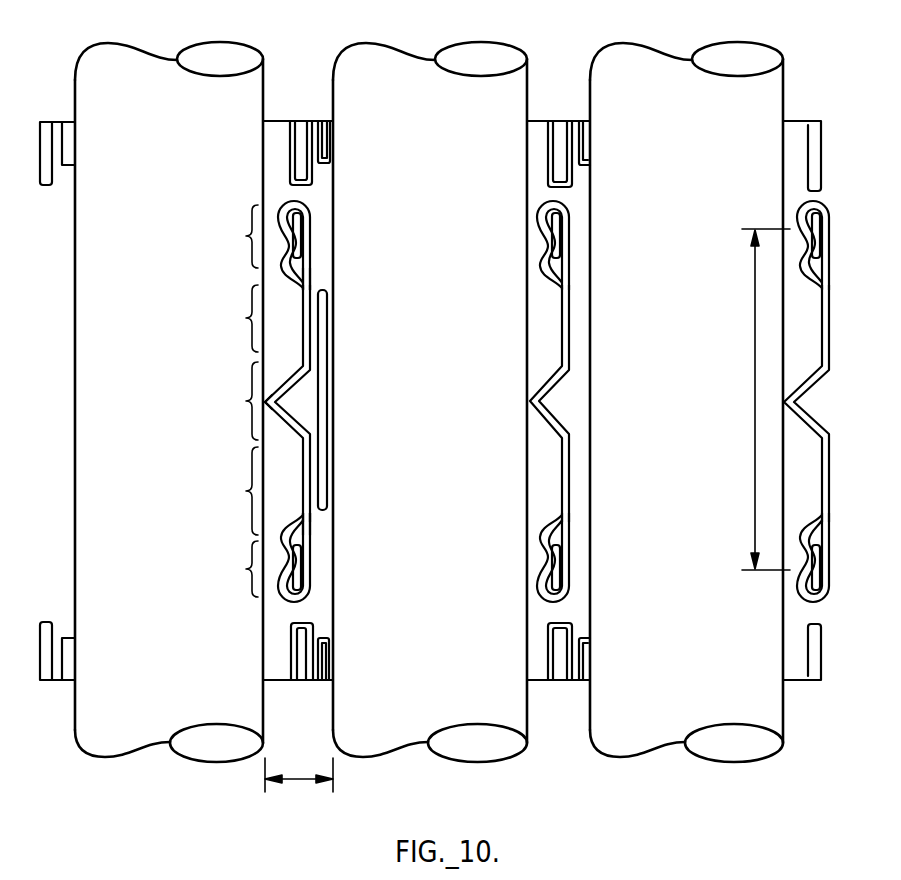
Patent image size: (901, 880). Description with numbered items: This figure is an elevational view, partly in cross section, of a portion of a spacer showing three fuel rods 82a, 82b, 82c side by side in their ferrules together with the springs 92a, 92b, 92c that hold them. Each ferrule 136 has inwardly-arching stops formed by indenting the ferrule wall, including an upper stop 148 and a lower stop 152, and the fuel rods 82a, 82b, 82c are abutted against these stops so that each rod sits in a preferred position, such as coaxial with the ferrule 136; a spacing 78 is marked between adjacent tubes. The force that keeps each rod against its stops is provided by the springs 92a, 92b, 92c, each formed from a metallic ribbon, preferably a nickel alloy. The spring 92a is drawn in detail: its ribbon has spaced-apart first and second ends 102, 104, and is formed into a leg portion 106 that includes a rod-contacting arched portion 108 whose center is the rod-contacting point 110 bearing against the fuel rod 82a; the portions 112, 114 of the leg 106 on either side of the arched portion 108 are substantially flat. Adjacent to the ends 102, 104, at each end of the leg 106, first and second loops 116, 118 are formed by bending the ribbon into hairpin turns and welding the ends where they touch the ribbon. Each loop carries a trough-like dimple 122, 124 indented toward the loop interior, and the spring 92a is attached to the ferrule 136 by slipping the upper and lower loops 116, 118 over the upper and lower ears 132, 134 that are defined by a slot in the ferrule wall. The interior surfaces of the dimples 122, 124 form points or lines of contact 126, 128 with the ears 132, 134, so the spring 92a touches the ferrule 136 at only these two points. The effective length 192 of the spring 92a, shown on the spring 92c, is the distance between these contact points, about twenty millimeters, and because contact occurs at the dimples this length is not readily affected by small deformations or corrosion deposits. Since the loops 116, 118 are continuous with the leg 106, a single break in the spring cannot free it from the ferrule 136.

The fuel rod 82a is at (104, 64).
The fuel rod 82b is at (384, 64).
The fuel rod 82c is at (628, 64).
The upper stop 148 is at (67, 130).
The lower stop 152 is at (64, 628).
The ferrule 136 is at (277, 133).
The spacing between tubes 78 is at (290, 782).
The spring 92a is at (311, 351).
The spring 92b is at (570, 300).
The spring 92c is at (823, 437).
The rod-contacting point 110 is at (270, 388).
The leg portion 106 is at (329, 396).
The dimple 122 is at (274, 221).
The dimple 124 is at (274, 583).
The point or line of contact 126 is at (309, 223).
The lower hook inner bend 128 is at (306, 560).
The ear 132 is at (303, 243).
The ear 134 is at (303, 582).
The first end 102 is at (308, 268).
The second end 104 is at (308, 527).
The first loop 116 is at (246, 236).
The flat portion of the leg 112 is at (246, 318).
The rod-contacting arched portion 108 is at (246, 401).
The flat portion of the leg 114 is at (246, 491).
The second loop 118 is at (246, 569).
The effective length 192 is at (754, 302).